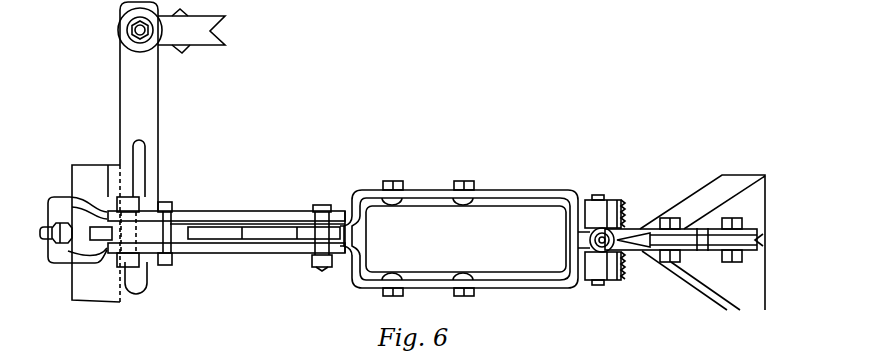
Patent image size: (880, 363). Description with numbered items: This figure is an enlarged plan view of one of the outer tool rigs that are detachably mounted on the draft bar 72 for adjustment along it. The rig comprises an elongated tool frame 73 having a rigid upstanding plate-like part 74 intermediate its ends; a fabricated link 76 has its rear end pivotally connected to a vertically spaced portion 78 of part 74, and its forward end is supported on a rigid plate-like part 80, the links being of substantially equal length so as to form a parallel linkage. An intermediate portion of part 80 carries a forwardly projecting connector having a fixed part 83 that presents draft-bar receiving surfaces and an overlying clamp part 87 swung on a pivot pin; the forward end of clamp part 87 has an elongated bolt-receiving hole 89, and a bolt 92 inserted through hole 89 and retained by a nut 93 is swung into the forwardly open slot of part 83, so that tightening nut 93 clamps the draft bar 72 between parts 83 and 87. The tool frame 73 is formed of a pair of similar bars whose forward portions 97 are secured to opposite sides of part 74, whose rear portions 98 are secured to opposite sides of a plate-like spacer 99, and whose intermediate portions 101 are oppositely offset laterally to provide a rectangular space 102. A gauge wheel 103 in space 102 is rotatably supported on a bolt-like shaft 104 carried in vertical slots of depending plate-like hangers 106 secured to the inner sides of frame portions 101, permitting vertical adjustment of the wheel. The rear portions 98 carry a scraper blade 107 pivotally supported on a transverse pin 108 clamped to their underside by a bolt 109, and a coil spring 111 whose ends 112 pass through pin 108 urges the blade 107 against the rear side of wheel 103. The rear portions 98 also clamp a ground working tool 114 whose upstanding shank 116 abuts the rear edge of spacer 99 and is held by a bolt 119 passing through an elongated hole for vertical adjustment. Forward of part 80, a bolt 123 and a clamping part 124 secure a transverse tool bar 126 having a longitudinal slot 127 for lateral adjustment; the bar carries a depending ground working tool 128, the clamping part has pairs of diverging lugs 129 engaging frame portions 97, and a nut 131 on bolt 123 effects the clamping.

The draft bar 72 is at (85, 165).
The tool frame 73 is at (358, 192).
The rigid upstanding plate-like part 74 is at (274, 240).
The fabricated link 76 is at (293, 216).
The vertically spaced portion 78 is at (318, 273).
The rigid plate-like part 80 is at (183, 241).
The fixed part 83 is at (143, 262).
The clamp part 87 is at (78, 198).
The bolt-receiving hole 89 is at (85, 224).
The bolt 92 is at (40, 233).
The nut 93 is at (52, 228).
The forward portions 97 is at (240, 207).
The rear portions 98 is at (745, 226).
The plate-like spacer 99 is at (690, 249).
The intermediate portions 101 is at (538, 192).
The rectangular space 102 is at (360, 273).
The gauge wheel 103 is at (494, 210).
The bolt-like shaft 104 is at (463, 181).
The plate-like hangers 106 is at (404, 198).
The scraper blade 107 is at (568, 280).
The transverse pin 108 is at (600, 196).
The bolt 109 is at (590, 240).
The coil spring 111 is at (626, 204).
The spring ends 112 is at (611, 285).
The ground working tool 114 is at (697, 190).
The shank 116 is at (760, 240).
The bolt 119 is at (723, 219).
The bolt 123 is at (130, 27).
The clamping part 124 is at (140, 200).
The transverse tool bar 126 is at (120, 94).
The longitudinal slot 127 is at (146, 150).
The ground working tool 128 is at (204, 48).
The lugs 129 is at (170, 208).
The nut 131 is at (132, 34).